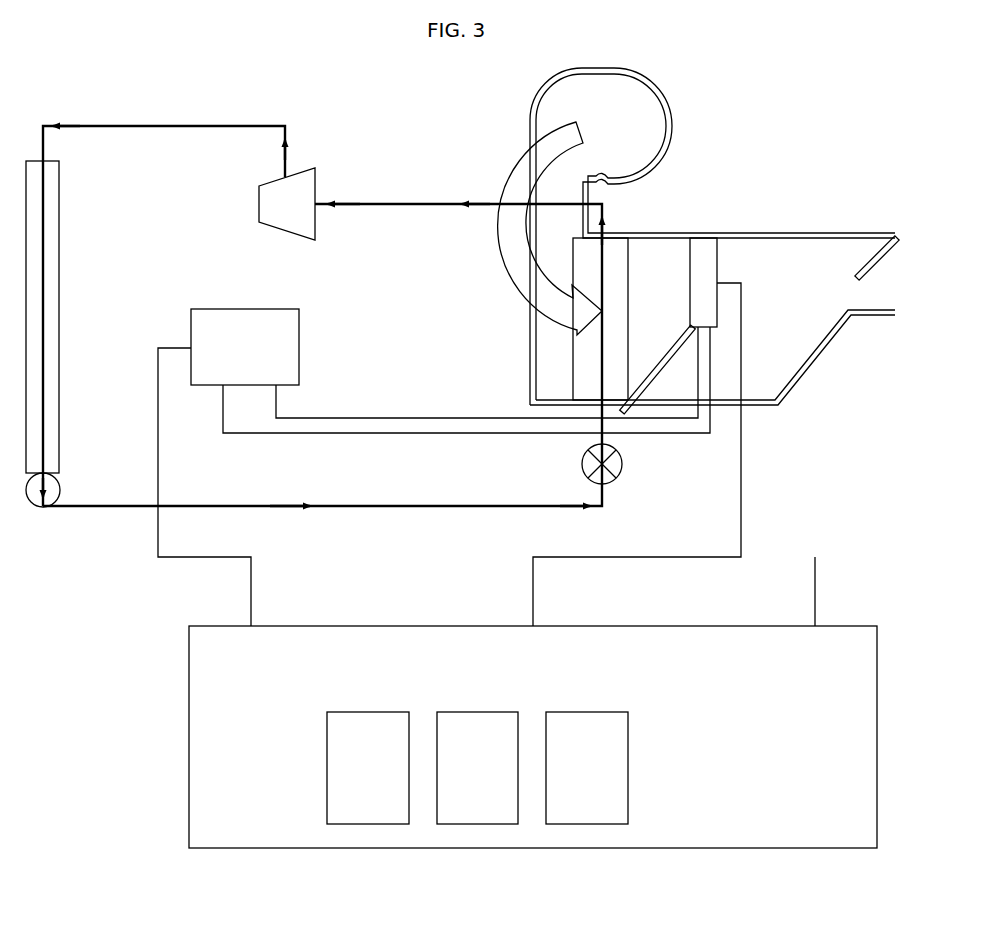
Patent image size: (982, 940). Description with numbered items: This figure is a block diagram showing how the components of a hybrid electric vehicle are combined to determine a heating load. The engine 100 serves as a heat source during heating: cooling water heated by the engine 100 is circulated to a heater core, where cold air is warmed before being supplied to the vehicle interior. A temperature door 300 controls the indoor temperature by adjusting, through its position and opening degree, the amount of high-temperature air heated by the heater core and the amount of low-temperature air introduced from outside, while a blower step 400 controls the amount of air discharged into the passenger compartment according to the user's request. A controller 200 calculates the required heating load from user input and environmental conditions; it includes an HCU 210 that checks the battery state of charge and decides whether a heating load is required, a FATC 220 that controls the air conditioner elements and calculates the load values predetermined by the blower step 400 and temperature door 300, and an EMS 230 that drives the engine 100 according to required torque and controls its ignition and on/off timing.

The engine 100 is at (220, 308).
The controller 200 is at (189, 690).
The hybrid control unit (HCU) 210 is at (370, 826).
The fully automatic temperature control unit (FATC) 220 is at (482, 826).
The engine management system (EMS) 230 is at (587, 826).
The temperature door 300 is at (659, 377).
The blower step 400 is at (866, 262).